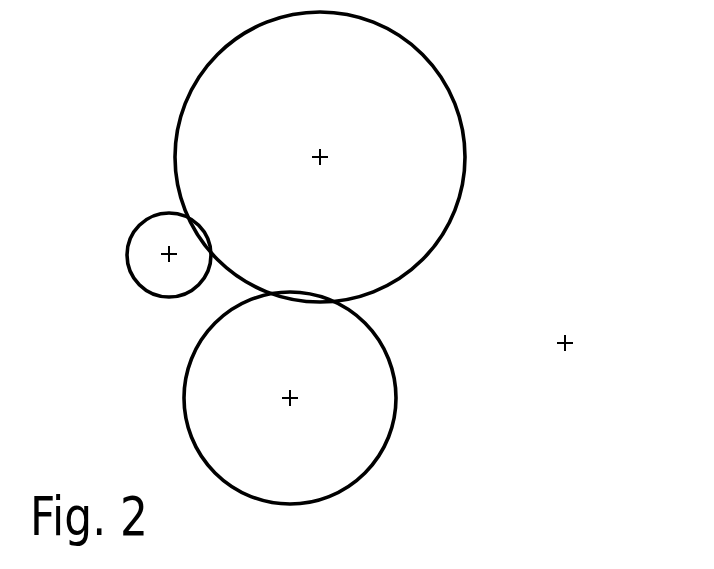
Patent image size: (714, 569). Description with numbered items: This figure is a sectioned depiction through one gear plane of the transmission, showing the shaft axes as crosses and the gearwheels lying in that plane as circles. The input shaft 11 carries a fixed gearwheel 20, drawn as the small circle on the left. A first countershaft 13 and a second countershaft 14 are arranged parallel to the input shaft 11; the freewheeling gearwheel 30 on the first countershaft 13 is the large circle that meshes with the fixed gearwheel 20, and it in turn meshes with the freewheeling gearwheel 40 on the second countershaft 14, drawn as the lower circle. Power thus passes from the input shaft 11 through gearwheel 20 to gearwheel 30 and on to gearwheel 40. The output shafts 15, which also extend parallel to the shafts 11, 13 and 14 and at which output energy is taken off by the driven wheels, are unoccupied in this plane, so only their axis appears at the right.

The input shaft 11 is at (165, 250).
The first countershaft 13 is at (322, 155).
The second countershaft 14 is at (293, 396).
The output shafts 15 is at (567, 341).
The fixed gearwheel 20 is at (148, 273).
The freewheeling gearwheel 30 is at (427, 98).
The freewheeling gearwheel 40 is at (355, 455).